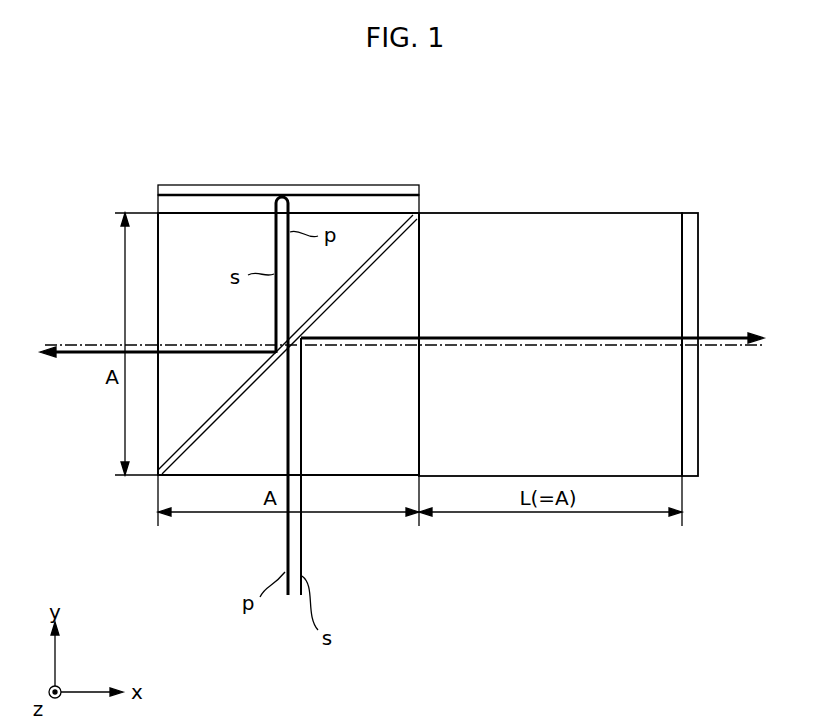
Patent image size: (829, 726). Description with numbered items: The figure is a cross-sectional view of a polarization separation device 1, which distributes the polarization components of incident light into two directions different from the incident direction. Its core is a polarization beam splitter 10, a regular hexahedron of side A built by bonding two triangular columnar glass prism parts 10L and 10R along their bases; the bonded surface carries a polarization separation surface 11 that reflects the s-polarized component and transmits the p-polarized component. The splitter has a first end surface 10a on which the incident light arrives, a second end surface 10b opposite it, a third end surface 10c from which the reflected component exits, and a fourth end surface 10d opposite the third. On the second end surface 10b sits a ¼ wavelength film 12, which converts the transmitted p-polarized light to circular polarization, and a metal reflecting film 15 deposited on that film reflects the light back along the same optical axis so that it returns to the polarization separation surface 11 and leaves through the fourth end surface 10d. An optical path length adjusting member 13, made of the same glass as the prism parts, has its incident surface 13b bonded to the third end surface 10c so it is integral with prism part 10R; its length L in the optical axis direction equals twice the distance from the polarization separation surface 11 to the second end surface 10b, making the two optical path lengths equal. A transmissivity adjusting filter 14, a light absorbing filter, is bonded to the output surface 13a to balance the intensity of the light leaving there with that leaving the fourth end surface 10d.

The polarization separation device 1 is at (638, 168).
The polarization beam splitter 10 is at (157, 212).
The prism part 10L is at (197, 228).
The prism part 10R is at (330, 455).
The first end surface 10a is at (368, 478).
The second end surface 10b is at (243, 210).
The third end surface 10c is at (419, 400).
The fourth end surface 10d is at (157, 290).
The polarization separation surface 11 is at (157, 468).
The ¼ wavelength film 12 is at (412, 203).
The optical path length adjusting member 13 is at (540, 212).
The output surface 13a is at (682, 402).
The incident surface 13b is at (417, 455).
The transmissivity adjusting filter 14 is at (698, 252).
The metal reflecting film 15 is at (390, 186).